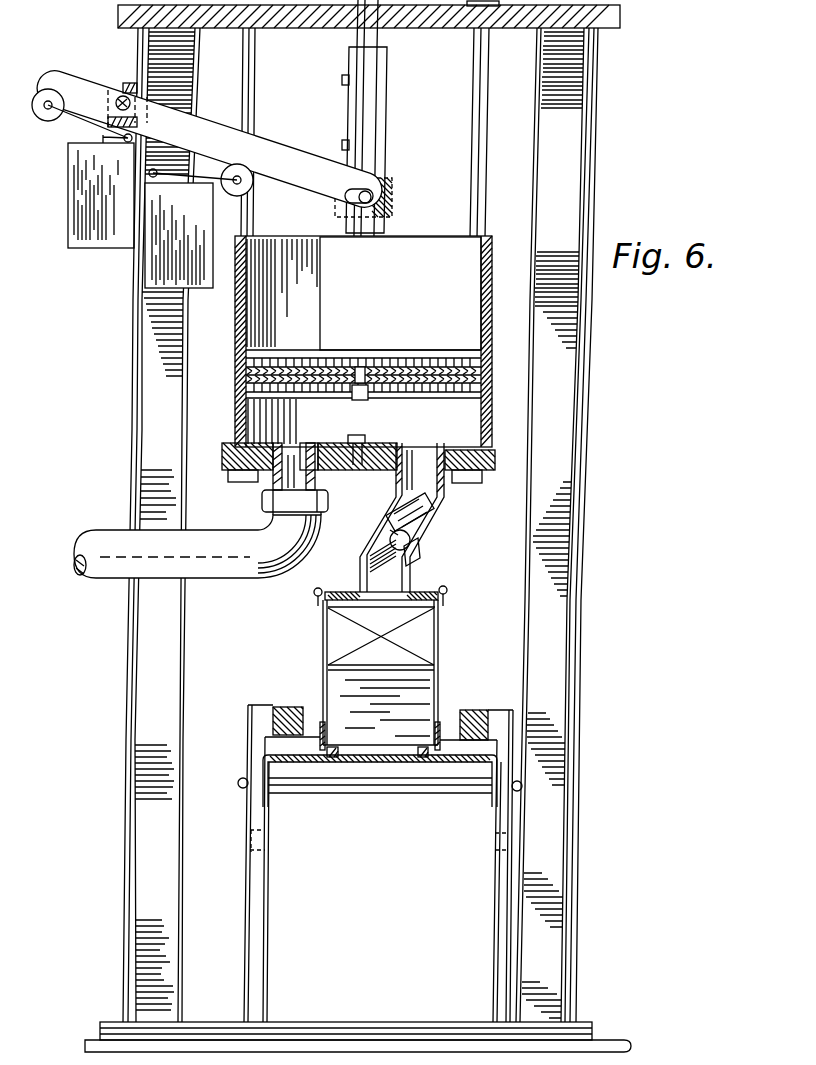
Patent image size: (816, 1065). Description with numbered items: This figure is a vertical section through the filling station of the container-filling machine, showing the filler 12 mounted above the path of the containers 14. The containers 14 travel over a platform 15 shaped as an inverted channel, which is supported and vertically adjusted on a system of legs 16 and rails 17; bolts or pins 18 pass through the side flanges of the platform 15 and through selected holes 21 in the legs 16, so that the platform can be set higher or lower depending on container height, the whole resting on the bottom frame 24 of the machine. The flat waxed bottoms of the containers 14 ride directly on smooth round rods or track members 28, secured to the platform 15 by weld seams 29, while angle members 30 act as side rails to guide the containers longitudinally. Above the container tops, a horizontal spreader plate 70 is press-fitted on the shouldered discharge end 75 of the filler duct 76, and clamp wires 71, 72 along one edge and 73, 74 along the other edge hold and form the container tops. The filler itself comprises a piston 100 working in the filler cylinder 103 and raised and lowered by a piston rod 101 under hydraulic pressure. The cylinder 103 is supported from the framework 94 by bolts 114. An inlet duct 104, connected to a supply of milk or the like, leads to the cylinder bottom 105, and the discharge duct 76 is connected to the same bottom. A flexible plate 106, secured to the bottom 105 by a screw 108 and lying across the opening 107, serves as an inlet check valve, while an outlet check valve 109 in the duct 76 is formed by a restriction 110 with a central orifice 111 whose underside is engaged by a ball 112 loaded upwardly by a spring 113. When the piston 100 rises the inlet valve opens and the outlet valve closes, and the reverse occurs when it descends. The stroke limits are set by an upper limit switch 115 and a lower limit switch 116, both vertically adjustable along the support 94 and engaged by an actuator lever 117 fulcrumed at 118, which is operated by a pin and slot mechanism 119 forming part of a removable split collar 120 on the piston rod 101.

The filler 12 is at (607, 376).
The containers 14 is at (438, 647).
The platform 15 is at (390, 757).
The legs 16 is at (245, 940).
The rails 17 is at (293, 707).
The bolts or pins 18 is at (433, 790).
The holes 21 is at (247, 852).
The bottom frame 24 is at (352, 1030).
The rods or track members 28 is at (413, 738).
The weld seams 29 is at (360, 752).
The angle members 30 is at (313, 745).
The spreader plate 70 is at (420, 592).
The clamp wire 71 is at (320, 600).
The clamp wire 72 is at (314, 592).
The clamp wire 73 is at (445, 598).
The clamp wire 74 is at (448, 589).
The shouldered discharge end 75 is at (388, 608).
The filler duct 76 is at (447, 497).
The support member 94 is at (125, 757).
The piston 100 is at (416, 365).
The piston rod 101 is at (375, 290).
The filler cylinder 103 is at (240, 375).
The inlet duct 104 is at (107, 530).
The cylinder bottom 105 is at (377, 472).
The flexible plate 106 is at (316, 443).
The opening 107 is at (297, 458).
The screw 108 is at (365, 437).
The outlet check valve 109 is at (447, 541).
The restriction 110 is at (390, 527).
The central orifice 111 is at (412, 520).
The ball 112 is at (390, 541).
The spring 113 is at (372, 558).
The bolts 114 is at (472, 128).
The upper limit switch 115 is at (77, 226).
The lower limit switch 116 is at (173, 290).
The actuator lever 117 is at (284, 162).
The fulcrum 118 is at (125, 96).
The pin and slot mechanism 119 is at (377, 196).
The removable split collar 120 is at (386, 100).